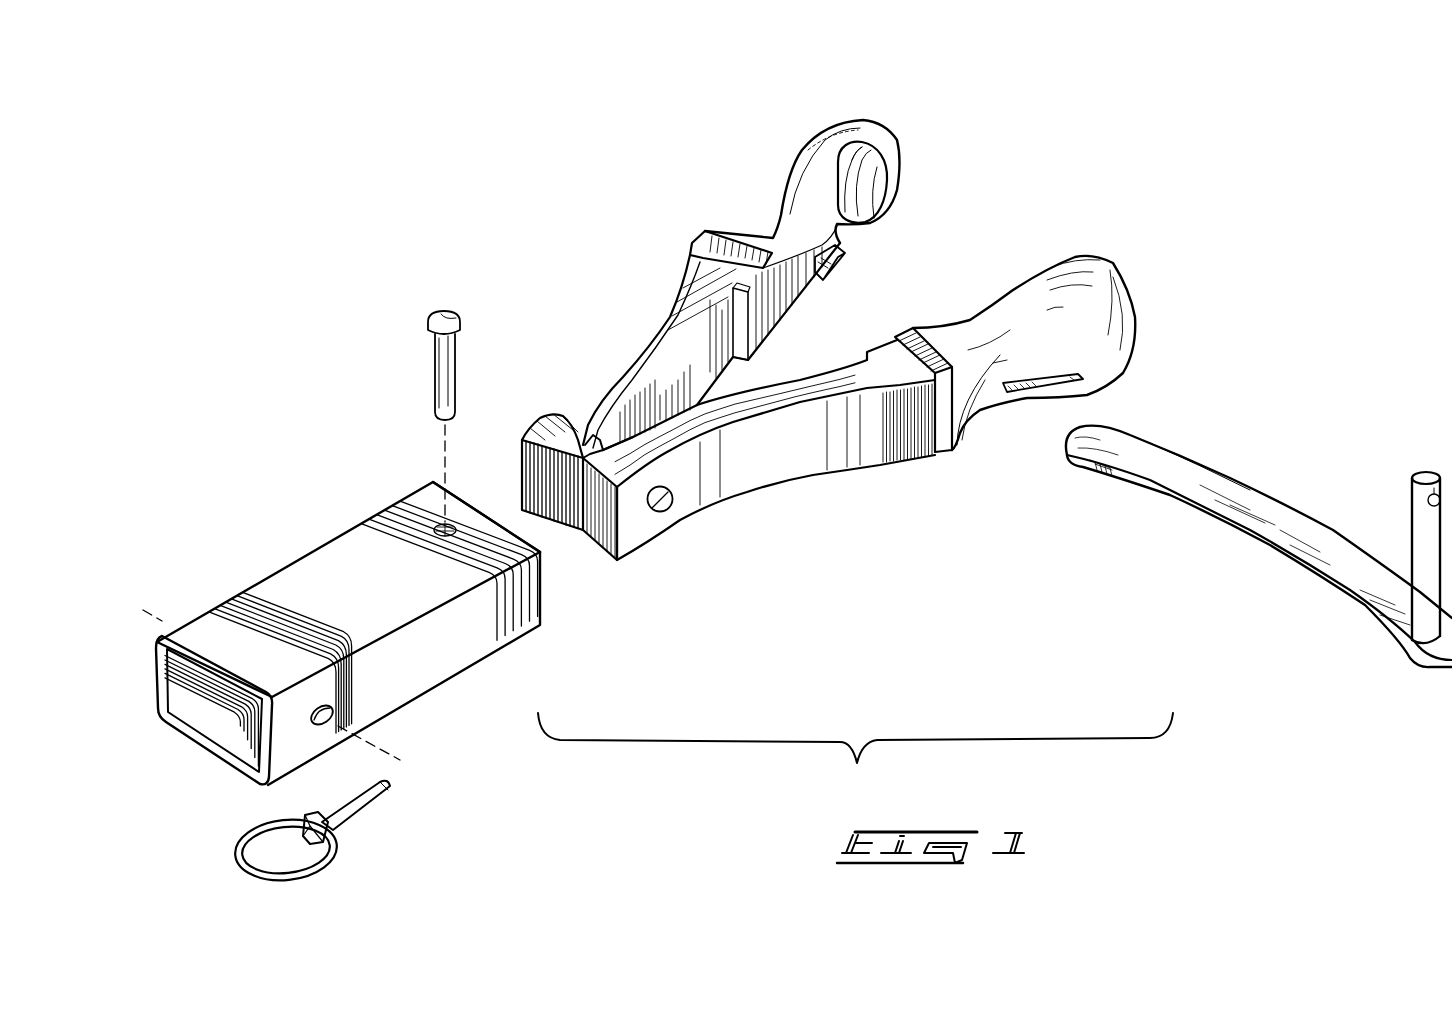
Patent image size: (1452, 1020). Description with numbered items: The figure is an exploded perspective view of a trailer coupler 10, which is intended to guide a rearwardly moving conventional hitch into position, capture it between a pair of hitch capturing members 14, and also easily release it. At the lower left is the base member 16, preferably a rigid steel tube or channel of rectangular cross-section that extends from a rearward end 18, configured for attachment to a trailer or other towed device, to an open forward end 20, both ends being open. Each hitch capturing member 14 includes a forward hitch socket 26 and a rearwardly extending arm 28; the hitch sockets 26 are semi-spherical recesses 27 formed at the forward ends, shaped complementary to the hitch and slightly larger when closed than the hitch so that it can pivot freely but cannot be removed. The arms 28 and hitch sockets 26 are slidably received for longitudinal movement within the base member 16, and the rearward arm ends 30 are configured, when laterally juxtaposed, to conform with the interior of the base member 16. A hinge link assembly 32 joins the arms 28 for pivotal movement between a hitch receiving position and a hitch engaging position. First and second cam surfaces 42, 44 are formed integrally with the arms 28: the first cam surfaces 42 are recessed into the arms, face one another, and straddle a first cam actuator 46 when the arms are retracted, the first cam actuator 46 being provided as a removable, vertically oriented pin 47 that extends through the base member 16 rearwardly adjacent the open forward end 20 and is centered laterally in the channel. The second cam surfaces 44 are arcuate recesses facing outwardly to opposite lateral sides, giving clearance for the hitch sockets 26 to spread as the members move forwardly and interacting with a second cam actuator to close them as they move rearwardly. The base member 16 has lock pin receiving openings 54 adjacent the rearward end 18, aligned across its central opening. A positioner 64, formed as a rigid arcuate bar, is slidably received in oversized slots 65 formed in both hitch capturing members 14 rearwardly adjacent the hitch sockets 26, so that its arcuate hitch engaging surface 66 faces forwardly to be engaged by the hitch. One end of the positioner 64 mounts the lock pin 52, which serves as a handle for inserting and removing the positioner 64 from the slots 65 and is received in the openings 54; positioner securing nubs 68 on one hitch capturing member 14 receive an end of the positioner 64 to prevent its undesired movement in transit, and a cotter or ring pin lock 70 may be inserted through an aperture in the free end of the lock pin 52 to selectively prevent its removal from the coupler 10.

The trailer coupler 10 is at (1083, 170).
The hitch capturing members 14 is at (693, 237).
The base member 16 is at (478, 675).
The rearward end 18 is at (225, 760).
The open forward end 20 is at (548, 590).
The hitch socket 26 is at (872, 200).
The semi-spherical recesses 27 is at (872, 178).
The rearwardly extending arm 28 is at (597, 397).
The rearward arm ends 30 is at (545, 490).
The hinge link assembly 32 is at (597, 443).
The first cam surfaces 42 is at (700, 338).
The second cam surfaces 44 is at (637, 363).
The first cam actuator 46 is at (437, 378).
The pin 47 is at (450, 360).
The lock pin 52 is at (1408, 515).
The lock pin receiving openings 54 is at (328, 727).
The positioner 64 is at (1200, 513).
The slots 65 is at (838, 262).
The arcuate hitch engaging surface 66 is at (1180, 452).
The positioner securing nubs 68 is at (688, 252).
The ring pin lock 70 is at (353, 820).